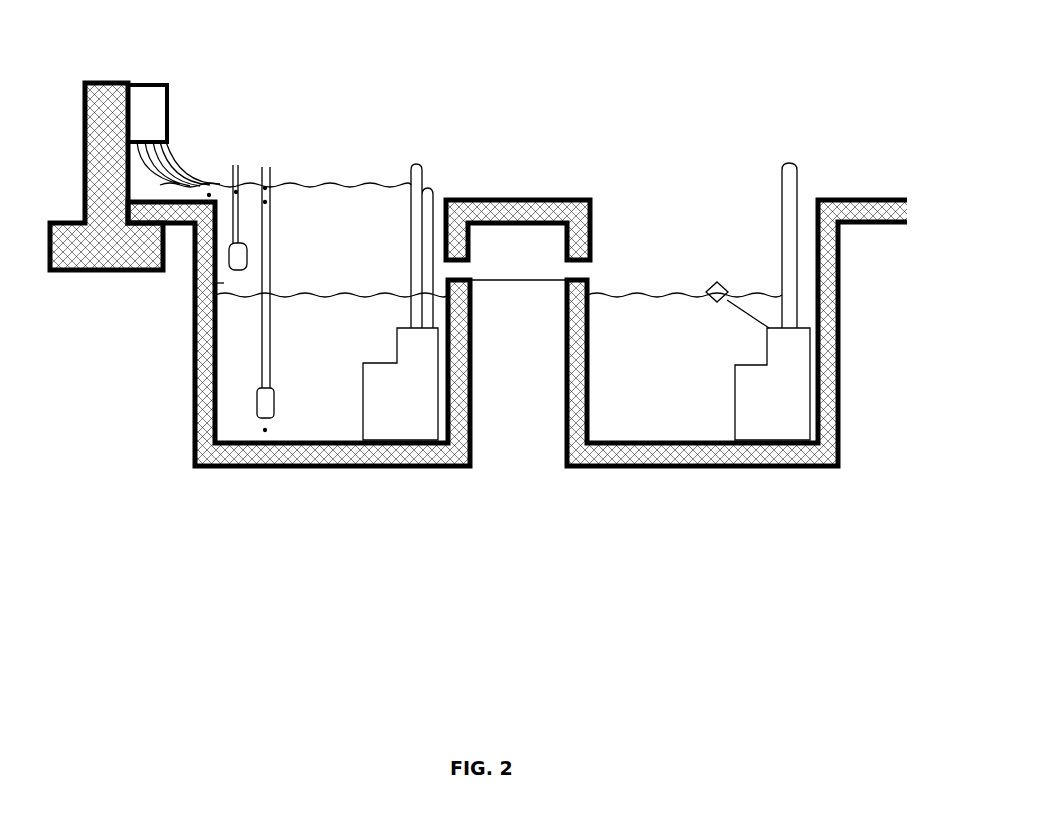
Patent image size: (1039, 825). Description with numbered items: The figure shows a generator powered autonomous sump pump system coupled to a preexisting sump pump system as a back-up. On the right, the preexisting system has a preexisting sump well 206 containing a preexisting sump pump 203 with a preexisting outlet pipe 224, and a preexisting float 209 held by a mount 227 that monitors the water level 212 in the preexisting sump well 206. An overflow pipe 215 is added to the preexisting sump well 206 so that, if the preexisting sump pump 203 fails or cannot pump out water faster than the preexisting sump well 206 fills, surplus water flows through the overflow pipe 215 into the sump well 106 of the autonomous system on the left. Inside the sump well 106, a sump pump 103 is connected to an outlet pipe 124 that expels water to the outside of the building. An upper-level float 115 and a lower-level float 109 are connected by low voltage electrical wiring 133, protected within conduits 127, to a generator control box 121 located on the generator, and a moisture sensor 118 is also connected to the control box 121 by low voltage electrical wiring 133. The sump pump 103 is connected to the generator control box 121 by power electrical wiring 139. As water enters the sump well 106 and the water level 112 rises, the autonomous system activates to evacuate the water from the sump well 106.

The sump pump 103 is at (414, 393).
The sump well 106 is at (189, 415).
The lower-level float 109 is at (276, 404).
The water level 112 is at (325, 297).
The upper-level float 115 is at (231, 258).
The moisture sensor 118 is at (222, 282).
The generator control box 121 is at (169, 100).
The outlet pipe 124 is at (425, 172).
The conduits 127 is at (243, 222).
The low voltage electrical wiring 133 is at (209, 196).
The power electrical wiring 139 is at (303, 182).
The preexisting sump pump 203 is at (797, 383).
The preexisting sump well 206 is at (846, 434).
The preexisting float 209 is at (709, 299).
The water level 212 is at (635, 300).
The overflow pipe 215 is at (518, 279).
The preexisting outlet pipe 224 is at (798, 176).
The mount 227 is at (742, 312).